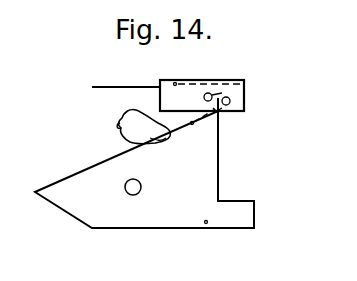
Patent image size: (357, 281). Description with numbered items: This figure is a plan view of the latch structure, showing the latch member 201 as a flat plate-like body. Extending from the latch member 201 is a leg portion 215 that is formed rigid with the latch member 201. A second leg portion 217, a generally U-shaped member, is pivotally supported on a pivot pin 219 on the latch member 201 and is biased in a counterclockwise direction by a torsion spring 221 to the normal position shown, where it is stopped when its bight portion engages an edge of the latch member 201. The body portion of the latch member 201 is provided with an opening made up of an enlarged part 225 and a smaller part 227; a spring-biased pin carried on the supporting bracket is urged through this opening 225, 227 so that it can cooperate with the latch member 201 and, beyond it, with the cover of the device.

The latch member 201 is at (97, 193).
The leg portion 215 is at (237, 206).
The leg portion 217 is at (243, 95).
The pivot pin 219 is at (209, 93).
The torsion spring 221 is at (218, 113).
The enlarged part 225 is at (118, 128).
The smaller part 227 is at (150, 138).